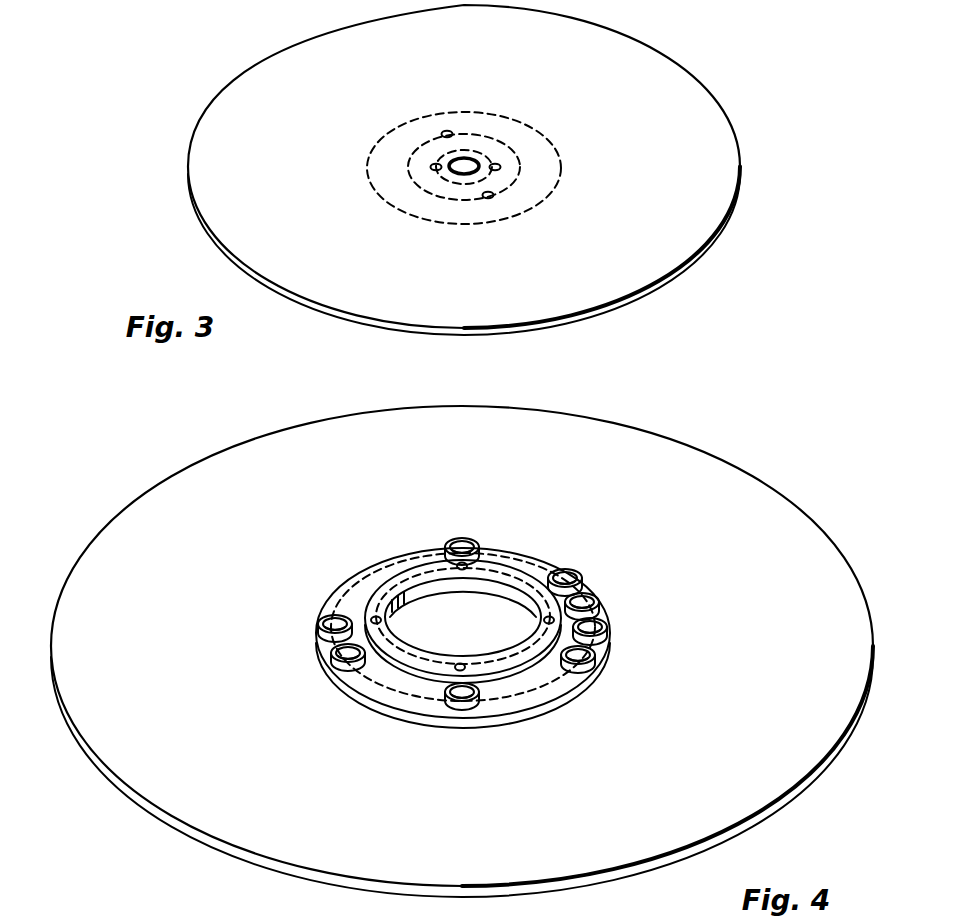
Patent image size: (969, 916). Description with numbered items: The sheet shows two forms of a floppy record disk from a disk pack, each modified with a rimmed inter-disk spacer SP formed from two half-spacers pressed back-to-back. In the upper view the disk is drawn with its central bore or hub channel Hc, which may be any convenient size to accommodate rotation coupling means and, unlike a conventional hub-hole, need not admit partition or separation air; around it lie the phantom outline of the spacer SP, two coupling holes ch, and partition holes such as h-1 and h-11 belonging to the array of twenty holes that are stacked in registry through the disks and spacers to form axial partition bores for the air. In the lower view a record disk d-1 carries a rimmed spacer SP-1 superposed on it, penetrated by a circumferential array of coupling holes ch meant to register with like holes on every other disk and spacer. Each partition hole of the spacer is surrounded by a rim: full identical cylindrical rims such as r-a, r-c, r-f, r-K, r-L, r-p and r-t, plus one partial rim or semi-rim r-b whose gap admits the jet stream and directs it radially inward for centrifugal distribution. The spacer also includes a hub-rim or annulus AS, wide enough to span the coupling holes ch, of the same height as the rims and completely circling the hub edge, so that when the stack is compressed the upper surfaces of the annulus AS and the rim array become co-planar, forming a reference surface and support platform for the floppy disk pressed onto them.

In FIG. 3, the record disk d-1 is at (695, 78).
In FIG. 4, the record disk d-1 is at (765, 480).
In FIG. 3, the inter-disk spacer SP is at (556, 150).
In FIG. 3, the central bore Hc is at (461, 158).
In FIG. 3, the partition hole h-1 is at (446, 131).
In FIG. 3, the partition hole h-11 is at (490, 198).
In FIG. 3, the coupling holes ch is at (430, 164).
In FIG. 4, the coupling holes ch is at (376, 616).
In FIG. 4, the rimmed spacer SP-1 is at (515, 553).
In FIG. 4, the hub-rim annulus AS is at (518, 651).
In FIG. 4, the cylindrical rim r-f is at (460, 538).
In FIG. 4, the cylindrical rim r-c is at (583, 578).
In FIG. 4, the partial rim r-b is at (600, 602).
In FIG. 4, the cylindrical rim r-a is at (608, 631).
In FIG. 4, the cylindrical rim r-t is at (597, 659).
In FIG. 4, the cylindrical rim r-p is at (478, 706).
In FIG. 4, the cylindrical rim r-L is at (331, 656).
In FIG. 4, the cylindrical rim r-K is at (319, 626).